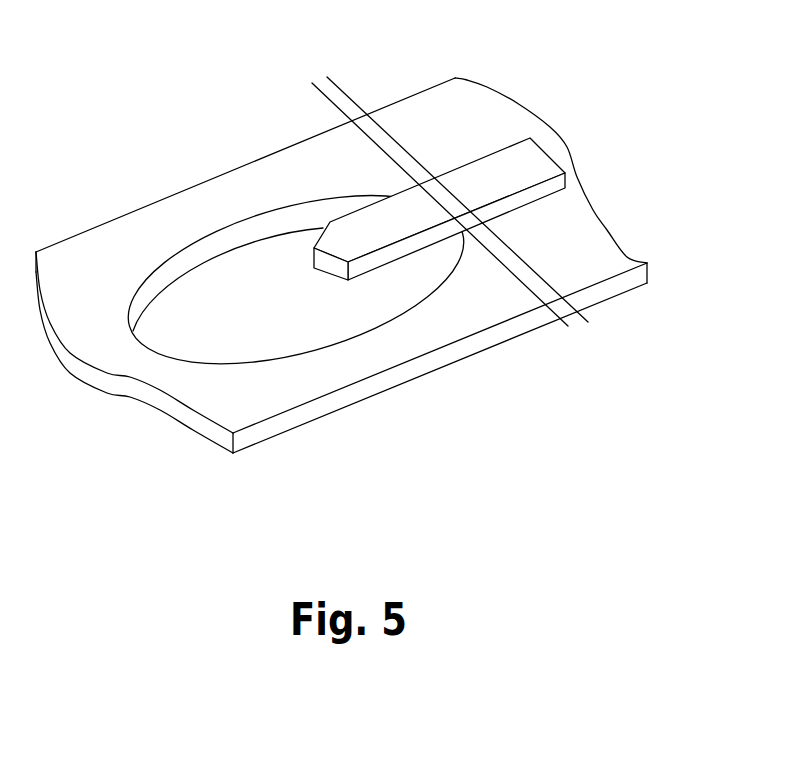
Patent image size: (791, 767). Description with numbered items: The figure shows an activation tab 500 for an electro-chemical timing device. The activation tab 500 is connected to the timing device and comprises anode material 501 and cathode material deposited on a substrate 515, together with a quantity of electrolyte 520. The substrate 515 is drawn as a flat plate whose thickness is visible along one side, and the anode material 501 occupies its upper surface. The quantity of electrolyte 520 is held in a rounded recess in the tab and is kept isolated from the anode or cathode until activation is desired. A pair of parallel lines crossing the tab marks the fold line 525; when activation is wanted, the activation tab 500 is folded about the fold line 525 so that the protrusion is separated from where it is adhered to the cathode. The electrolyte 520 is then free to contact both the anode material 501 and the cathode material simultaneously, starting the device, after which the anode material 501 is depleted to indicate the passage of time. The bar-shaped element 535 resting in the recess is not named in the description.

The activation tab 500 is at (363, 232).
The anode material 501 is at (605, 260).
The substrate 515 is at (643, 282).
The quantity of electrolyte 520 is at (293, 327).
The fold line 525 is at (575, 323).
The rectangular bar 535 is at (473, 172).